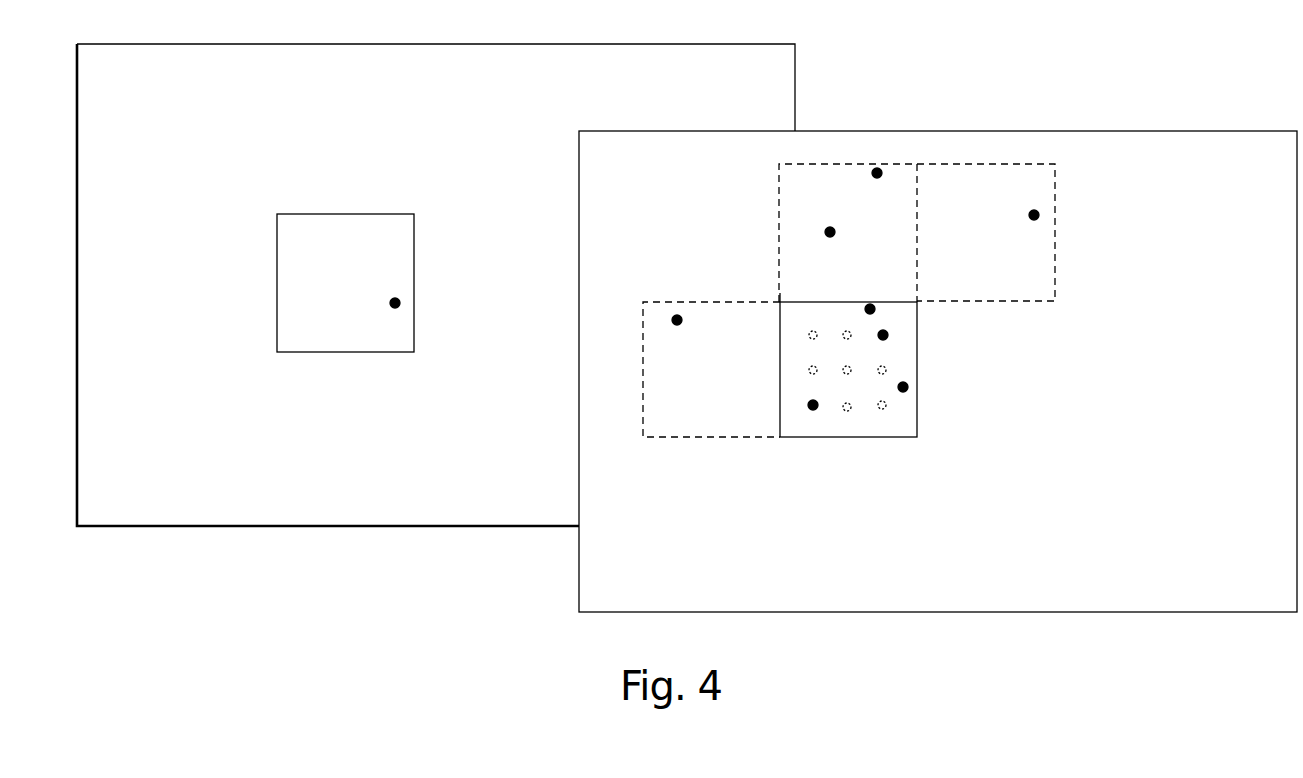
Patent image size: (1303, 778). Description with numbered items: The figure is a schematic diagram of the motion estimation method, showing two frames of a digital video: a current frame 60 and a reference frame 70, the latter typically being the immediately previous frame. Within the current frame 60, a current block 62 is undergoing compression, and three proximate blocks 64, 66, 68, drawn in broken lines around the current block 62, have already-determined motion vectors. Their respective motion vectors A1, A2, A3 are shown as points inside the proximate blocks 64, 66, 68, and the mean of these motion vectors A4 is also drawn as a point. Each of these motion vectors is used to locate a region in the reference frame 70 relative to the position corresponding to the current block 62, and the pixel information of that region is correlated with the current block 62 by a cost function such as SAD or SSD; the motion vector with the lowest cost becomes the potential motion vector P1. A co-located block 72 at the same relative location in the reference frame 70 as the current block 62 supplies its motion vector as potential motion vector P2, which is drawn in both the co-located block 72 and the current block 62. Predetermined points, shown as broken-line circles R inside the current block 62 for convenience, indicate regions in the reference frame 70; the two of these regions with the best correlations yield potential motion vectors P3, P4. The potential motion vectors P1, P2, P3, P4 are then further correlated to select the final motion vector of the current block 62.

The current frame 60 is at (1195, 130).
The current block 62 is at (886, 393).
The proximate block 64 is at (707, 440).
The proximate block 66 is at (779, 212).
The proximate block 68 is at (1055, 232).
The reference frame 70 is at (600, 44).
The co-located block 72 is at (300, 213).
The broken-line circles R is at (880, 412).
The potential motion vector P1 is at (863, 310).
The potential motion vector P2 is at (897, 387).
The potential motion vector P3 is at (878, 338).
The potential motion vector P4 is at (818, 410).
The motion vector A1 is at (677, 336).
The motion vector A2 is at (876, 188).
The motion vector A3 is at (1026, 231).
The mean motion vector A4 is at (829, 248).